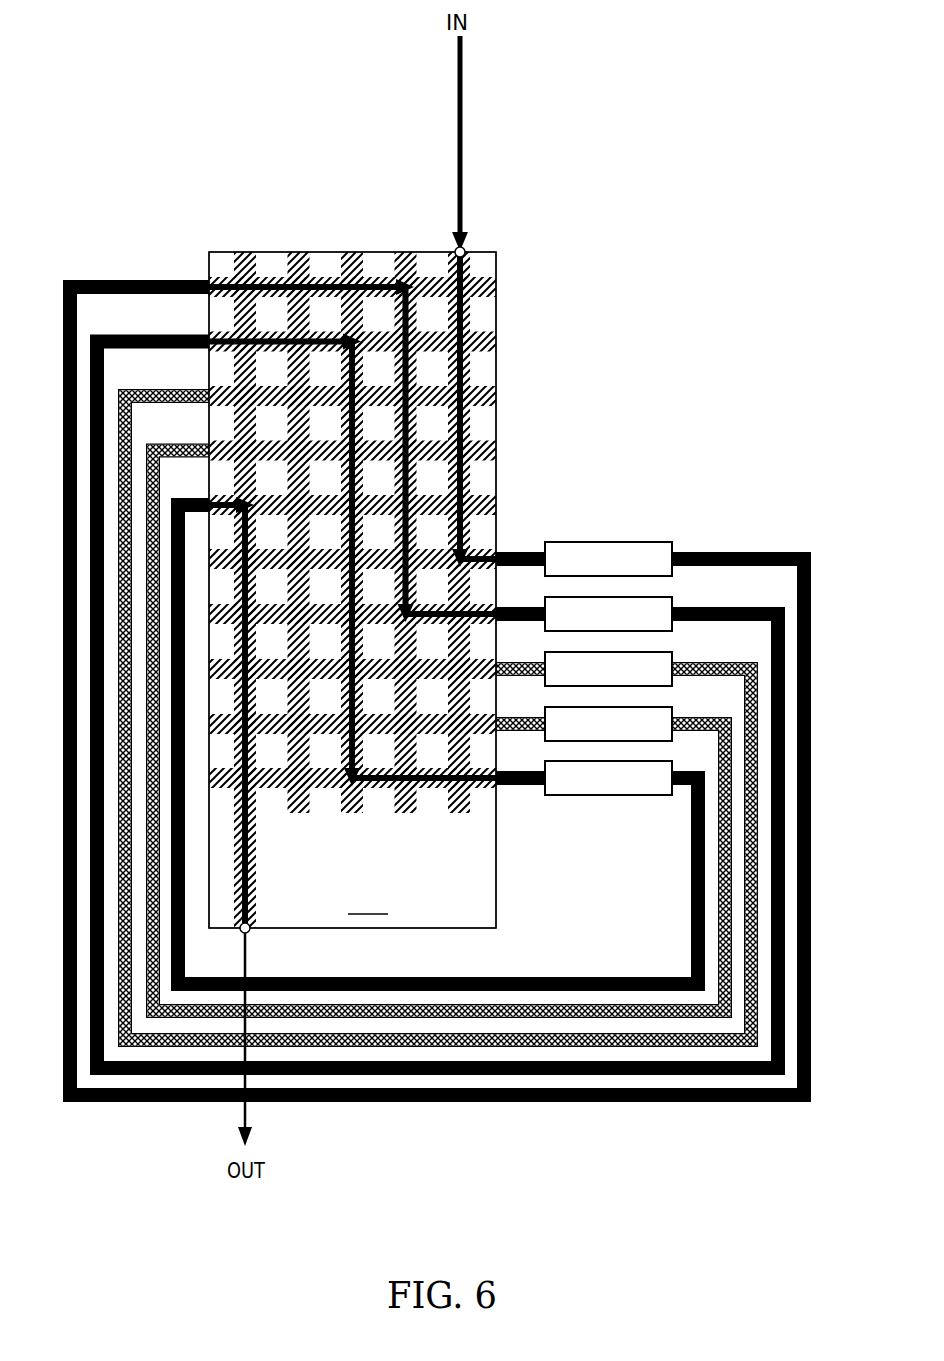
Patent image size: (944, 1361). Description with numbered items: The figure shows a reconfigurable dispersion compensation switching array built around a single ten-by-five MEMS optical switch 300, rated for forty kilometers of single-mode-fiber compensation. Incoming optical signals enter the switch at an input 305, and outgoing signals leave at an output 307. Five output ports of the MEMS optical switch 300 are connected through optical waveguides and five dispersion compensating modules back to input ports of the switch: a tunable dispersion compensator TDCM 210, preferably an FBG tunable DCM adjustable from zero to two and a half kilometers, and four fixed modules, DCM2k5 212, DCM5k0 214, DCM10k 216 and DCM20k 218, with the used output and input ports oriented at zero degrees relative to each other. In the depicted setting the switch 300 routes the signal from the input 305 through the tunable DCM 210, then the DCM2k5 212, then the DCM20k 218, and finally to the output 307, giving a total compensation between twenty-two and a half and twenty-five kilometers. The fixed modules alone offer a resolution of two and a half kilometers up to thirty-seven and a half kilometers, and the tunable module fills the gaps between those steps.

The single 10×5 MEMS optical switch 300 is at (361, 589).
The input 305 is at (463, 247).
The output 307 is at (249, 933).
The tunable dispersion compensator TDCM 0–2k5 210 is at (582, 542).
The DCM2k5 212 is at (582, 597).
The DCM5k0 214 is at (582, 652).
The DCM10k 216 is at (582, 707).
The DCM20k 218 is at (582, 761).